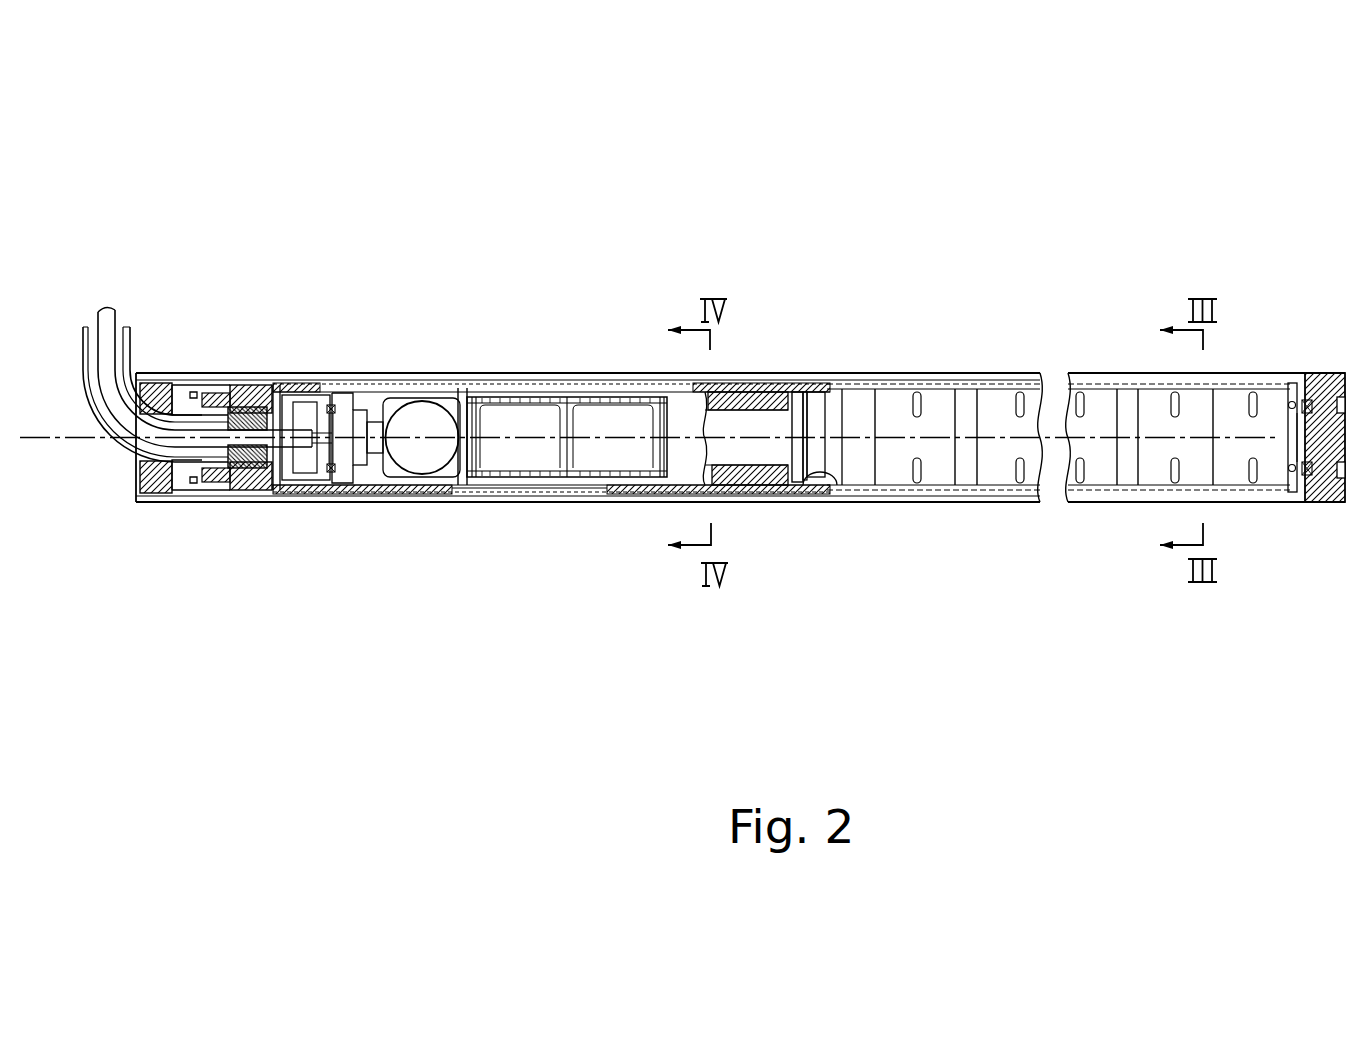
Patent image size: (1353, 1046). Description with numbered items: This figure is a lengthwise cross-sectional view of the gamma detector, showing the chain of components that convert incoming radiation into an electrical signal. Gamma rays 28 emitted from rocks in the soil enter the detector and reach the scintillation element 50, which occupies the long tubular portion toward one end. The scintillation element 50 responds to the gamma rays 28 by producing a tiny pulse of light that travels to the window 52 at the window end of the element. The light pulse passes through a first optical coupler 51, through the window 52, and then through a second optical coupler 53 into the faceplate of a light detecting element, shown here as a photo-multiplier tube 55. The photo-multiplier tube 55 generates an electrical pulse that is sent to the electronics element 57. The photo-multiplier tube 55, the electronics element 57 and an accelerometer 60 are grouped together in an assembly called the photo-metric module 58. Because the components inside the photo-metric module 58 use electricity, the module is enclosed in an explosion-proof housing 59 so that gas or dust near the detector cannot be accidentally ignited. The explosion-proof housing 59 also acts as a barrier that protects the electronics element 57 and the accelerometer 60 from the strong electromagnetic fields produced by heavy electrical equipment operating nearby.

The gamma rays 28 is at (1055, 337).
The scintillation element 50 is at (1066, 437).
The first optical coupler 51 is at (813, 423).
The window 52 is at (814, 394).
The second optical coupler 53 is at (793, 382).
The photo-multiplier tube 55 is at (745, 438).
The electronics element 57 is at (567, 437).
The photo-metric module 58 is at (768, 479).
The explosion-proof housing 59 is at (527, 485).
The accelerometer 60 is at (424, 414).